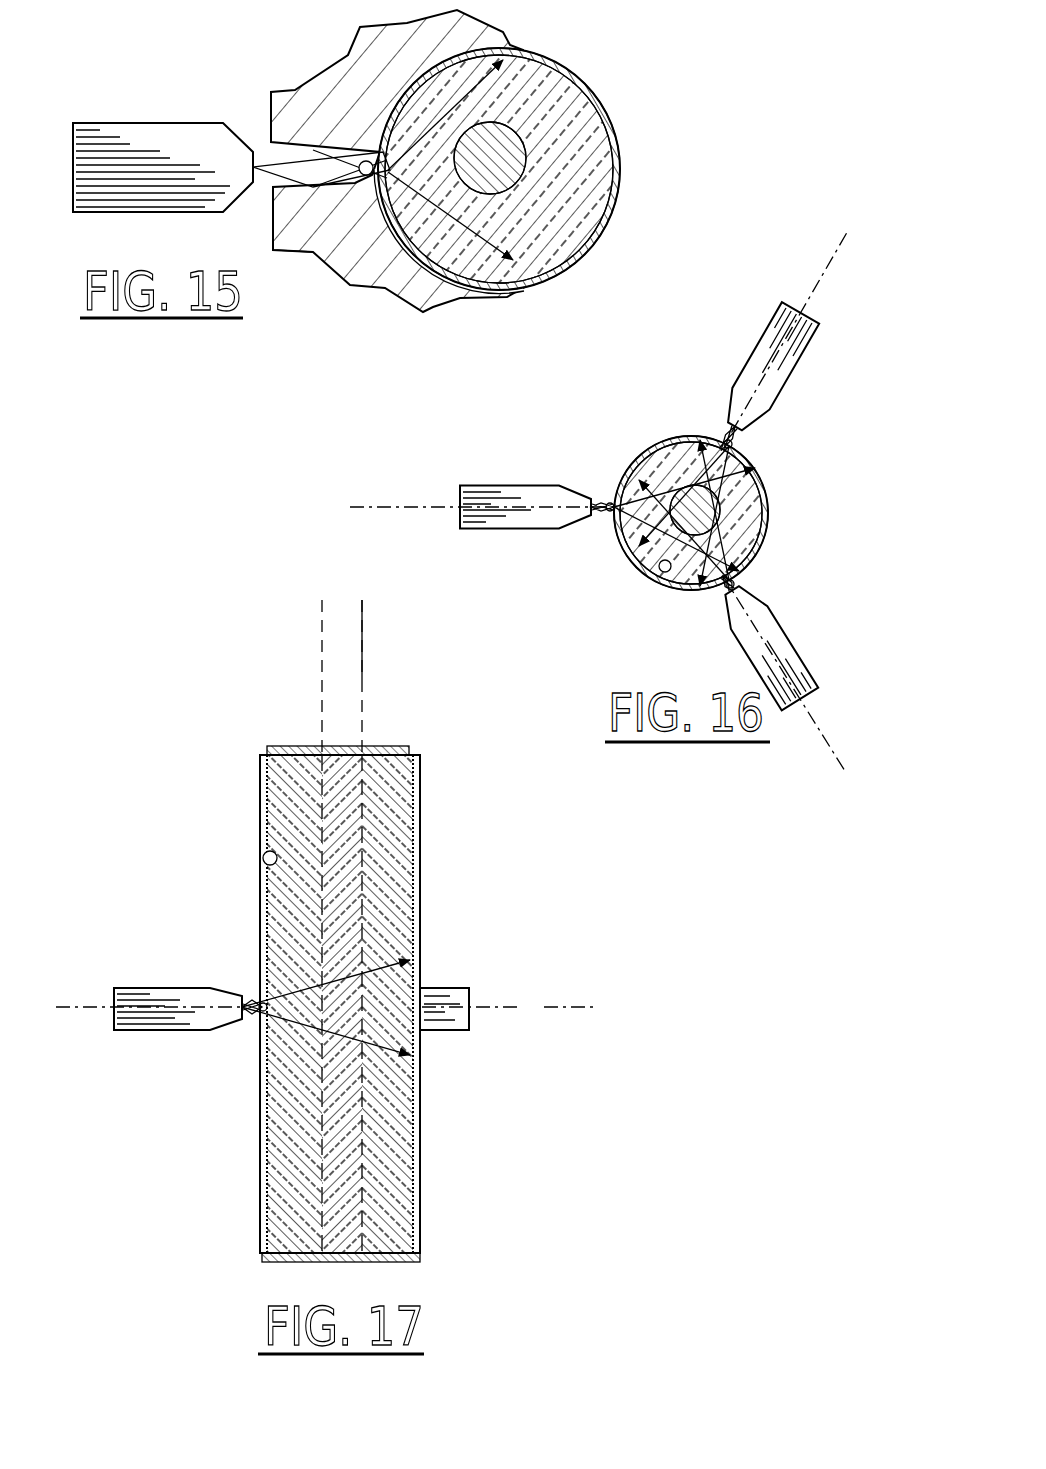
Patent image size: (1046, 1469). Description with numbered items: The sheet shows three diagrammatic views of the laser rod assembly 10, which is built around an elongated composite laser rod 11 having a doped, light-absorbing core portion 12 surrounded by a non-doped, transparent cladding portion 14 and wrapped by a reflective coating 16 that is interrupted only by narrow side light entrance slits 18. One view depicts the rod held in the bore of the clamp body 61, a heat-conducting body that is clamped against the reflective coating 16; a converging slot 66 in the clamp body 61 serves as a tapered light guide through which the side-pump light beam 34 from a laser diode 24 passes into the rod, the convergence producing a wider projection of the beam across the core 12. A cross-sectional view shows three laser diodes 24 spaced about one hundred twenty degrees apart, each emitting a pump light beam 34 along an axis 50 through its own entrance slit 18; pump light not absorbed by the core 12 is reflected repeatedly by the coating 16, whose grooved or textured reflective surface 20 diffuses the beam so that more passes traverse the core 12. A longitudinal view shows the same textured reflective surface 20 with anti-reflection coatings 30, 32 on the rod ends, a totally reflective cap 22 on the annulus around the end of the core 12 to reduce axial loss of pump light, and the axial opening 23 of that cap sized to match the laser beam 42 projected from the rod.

In FIG. 16, the laser rod assembly 10 is at (713, 489).
In FIG. 17, the laser rod assembly 10 is at (343, 947).
In FIG. 15, the composite laser rod 11 is at (527, 169).
In FIG. 16, the composite laser rod 11 is at (713, 506).
In FIG. 17, the composite laser rod 11 is at (343, 947).
In FIG. 15, the core portion 12 is at (527, 158).
In FIG. 16, the core portion 12 is at (722, 508).
In FIG. 17, the core portion 12 is at (362, 800).
In FIG. 15, the cladding portion 14 is at (612, 152).
In FIG. 16, the cladding portion 14 is at (760, 500).
In FIG. 17, the cladding portion 14 is at (412, 848).
In FIG. 15, the reflective coating 16 is at (618, 190).
In FIG. 16, the reflective coating 16 is at (765, 480).
In FIG. 17, the reflective coating 16 is at (420, 912).
In FIG. 15, the side light entrance slits 18 is at (363, 176).
In FIG. 16, the side light entrance slits 18 is at (722, 448).
In FIG. 17, the side light entrance slits 18 is at (262, 898).
In FIG. 16, the textured or grooved reflective surface 20 is at (660, 565).
In FIG. 17, the textured or grooved reflective surface 20 is at (262, 850).
In FIG. 17, the totally reflective cap 22 is at (320, 745).
In FIG. 17, the axial opening 23 is at (356, 747).
In FIG. 15, the laser diode 24 is at (160, 123).
In FIG. 16, the laser diode 24 is at (530, 486).
In FIG. 17, the laser diode 24 is at (168, 988).
In FIG. 17, the anti-reflection coating 30 is at (402, 748).
In FIG. 17, the anti-reflection coating 32 is at (400, 1262).
In FIG. 15, the side-pump light beam 34 is at (262, 160).
In FIG. 16, the side-pump light beam 34 is at (600, 503).
In FIG. 17, the side-pump light beam 34 is at (250, 1000).
In FIG. 17, the laser beam 42 is at (362, 675).
In FIG. 16, the axis of the pump light beam 50 is at (437, 504).
In FIG. 17, the axis of the pump light beam 50 is at (97, 1003).
In FIG. 15, the clamp body 61 is at (323, 68).
In FIG. 15, the converging slot 66 is at (273, 192).